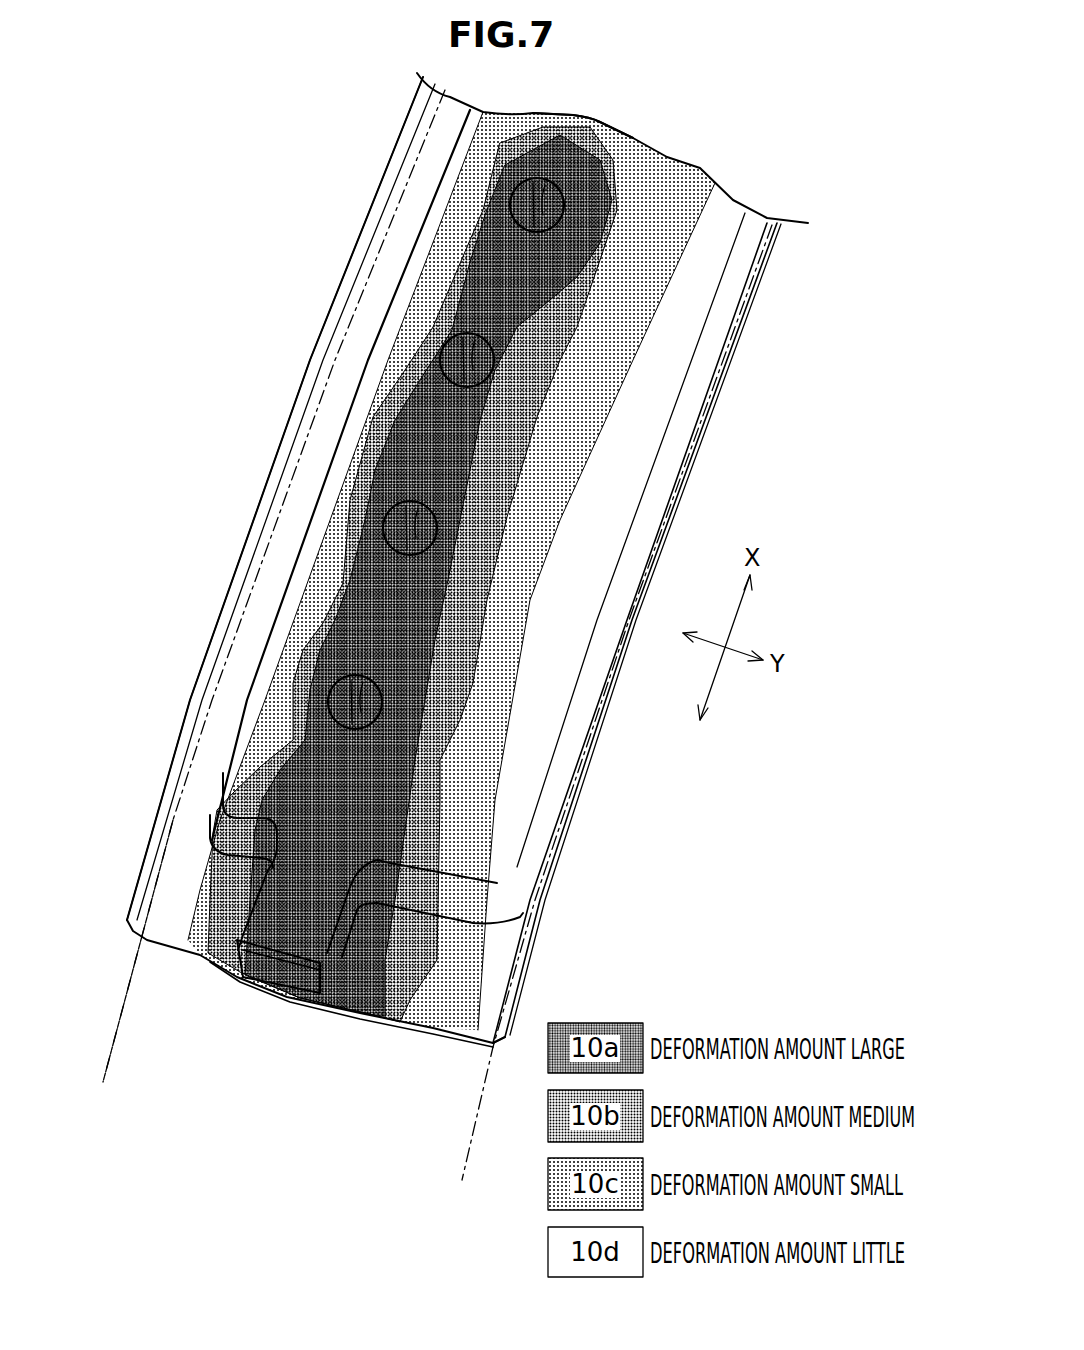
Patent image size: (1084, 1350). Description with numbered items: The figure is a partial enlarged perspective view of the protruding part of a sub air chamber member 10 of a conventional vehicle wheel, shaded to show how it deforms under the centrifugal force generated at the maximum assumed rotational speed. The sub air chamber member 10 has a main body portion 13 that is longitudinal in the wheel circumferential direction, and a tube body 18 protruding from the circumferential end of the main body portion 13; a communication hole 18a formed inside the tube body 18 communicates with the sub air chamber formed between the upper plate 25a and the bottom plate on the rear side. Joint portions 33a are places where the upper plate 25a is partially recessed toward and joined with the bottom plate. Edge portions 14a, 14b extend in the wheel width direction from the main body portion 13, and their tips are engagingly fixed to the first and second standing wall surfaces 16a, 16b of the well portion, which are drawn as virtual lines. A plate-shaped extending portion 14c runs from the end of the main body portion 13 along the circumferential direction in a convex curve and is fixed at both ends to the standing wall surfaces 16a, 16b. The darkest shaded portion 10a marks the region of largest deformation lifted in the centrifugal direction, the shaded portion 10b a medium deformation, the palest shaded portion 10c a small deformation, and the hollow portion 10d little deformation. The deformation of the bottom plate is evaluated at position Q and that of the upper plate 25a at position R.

The sub air chamber member 10 is at (256, 300).
The darkest shaded portion 10a is at (340, 780).
The shaded portion 10b is at (440, 800).
The palest shaded portion 10c is at (380, 410).
The hollow portion 10d is at (318, 513).
The main body portion 13 is at (455, 162).
The edge portion 14a is at (703, 402).
The edge portion 14b is at (352, 253).
The extending portion 14c is at (372, 1002).
The first standing wall surface 16a is at (473, 1115).
The second standing wall surface 16b is at (115, 1053).
The tube body 18 is at (240, 887).
The communication hole 18a is at (287, 970).
The upper plate 25a is at (683, 290).
The joint portions 33a is at (622, 170).
The position Q is at (387, 622).
The position R is at (440, 447).